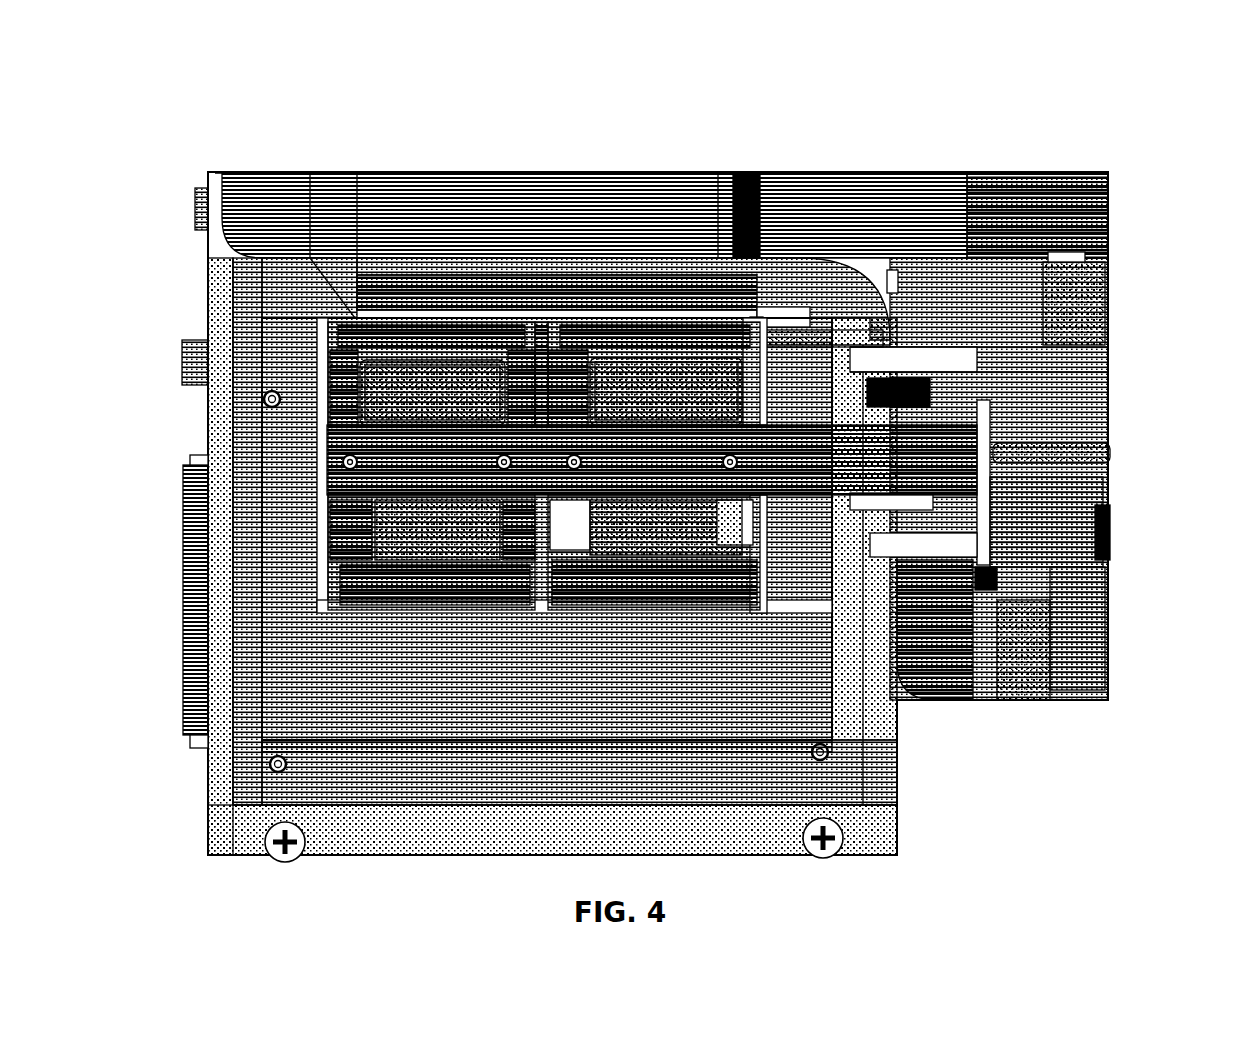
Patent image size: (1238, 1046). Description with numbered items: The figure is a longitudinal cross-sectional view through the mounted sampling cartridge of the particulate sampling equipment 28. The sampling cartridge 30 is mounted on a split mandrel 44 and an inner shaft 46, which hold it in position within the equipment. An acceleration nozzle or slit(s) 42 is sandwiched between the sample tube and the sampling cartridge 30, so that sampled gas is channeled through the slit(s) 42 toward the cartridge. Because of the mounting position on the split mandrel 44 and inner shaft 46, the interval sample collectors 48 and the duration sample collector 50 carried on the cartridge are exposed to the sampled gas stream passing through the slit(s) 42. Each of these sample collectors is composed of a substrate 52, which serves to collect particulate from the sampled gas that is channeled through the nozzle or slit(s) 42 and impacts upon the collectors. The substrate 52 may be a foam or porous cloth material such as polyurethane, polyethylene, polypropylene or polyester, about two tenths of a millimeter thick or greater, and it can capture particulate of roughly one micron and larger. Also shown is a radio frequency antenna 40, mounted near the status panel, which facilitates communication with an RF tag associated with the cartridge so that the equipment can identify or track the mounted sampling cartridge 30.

The particulate sampling equipment 28 is at (942, 202).
The sampling cartridge 30 is at (303, 347).
The radio frequency antenna 40 is at (748, 753).
The acceleration nozzle or slit 42 is at (697, 271).
The split mandrel 44 is at (484, 397).
The inner shaft 46 is at (798, 474).
The interval sample collectors 48 is at (402, 340).
The duration sample collector 50 is at (633, 318).
The substrate 52 is at (389, 591).